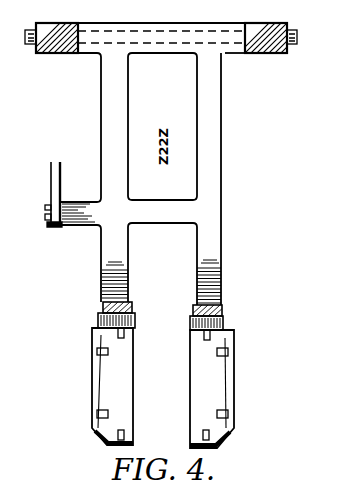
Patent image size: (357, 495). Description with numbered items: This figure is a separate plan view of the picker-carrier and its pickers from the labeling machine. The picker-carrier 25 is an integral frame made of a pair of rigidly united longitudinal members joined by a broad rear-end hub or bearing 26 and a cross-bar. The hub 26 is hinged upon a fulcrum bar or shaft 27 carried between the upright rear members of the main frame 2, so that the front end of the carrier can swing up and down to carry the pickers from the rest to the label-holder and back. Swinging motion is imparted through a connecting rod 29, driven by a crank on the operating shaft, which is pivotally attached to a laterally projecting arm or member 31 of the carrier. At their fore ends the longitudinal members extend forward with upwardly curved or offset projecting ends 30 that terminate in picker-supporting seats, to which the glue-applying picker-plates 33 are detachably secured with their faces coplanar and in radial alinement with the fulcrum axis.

The main frame 2 is at (53, 53).
The picker-carrier 25 is at (207, 213).
The rear-end hub or bearing 26 is at (172, 38).
The fulcrum bar or shaft 27 is at (296, 40).
The connecting rod 29 is at (55, 189).
The upwardly curved projecting ends 30 is at (106, 312).
The laterally projecting arm or member 31 is at (79, 213).
The glue-applying picker-plates 33 is at (113, 389).